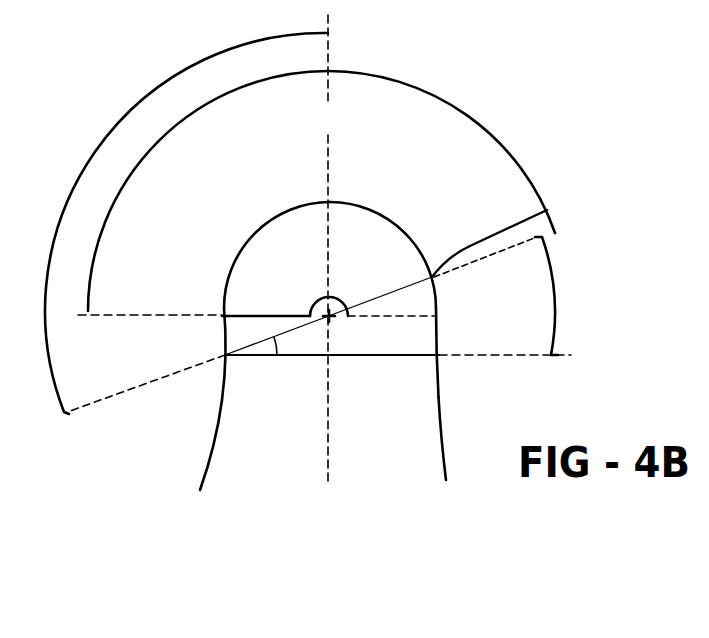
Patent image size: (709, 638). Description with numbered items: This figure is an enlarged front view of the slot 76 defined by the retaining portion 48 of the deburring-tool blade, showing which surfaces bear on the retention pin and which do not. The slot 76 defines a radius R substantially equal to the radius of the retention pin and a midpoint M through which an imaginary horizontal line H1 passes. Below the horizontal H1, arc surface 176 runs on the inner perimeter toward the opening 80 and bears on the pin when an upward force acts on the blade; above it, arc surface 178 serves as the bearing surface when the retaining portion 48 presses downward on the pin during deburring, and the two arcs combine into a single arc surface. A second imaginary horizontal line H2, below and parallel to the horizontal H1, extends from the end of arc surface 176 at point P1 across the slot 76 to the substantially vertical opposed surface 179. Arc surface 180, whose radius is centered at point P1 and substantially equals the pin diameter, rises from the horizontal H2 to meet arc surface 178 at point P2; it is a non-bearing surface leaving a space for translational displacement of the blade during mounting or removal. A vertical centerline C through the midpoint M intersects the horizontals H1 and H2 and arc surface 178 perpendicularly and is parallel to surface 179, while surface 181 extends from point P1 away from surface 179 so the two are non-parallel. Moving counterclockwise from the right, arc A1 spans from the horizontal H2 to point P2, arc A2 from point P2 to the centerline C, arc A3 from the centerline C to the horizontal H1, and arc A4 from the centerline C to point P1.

The retaining portion 48 is at (327, 293).
The slot 76 is at (418, 250).
The opening 80 is at (372, 421).
The arc surface 176 is at (226, 340).
The arc surface 178 is at (262, 226).
The opposed surface 179 is at (436, 397).
The arc surface 180 is at (437, 279).
The surface 181 is at (205, 459).
The arc A1 is at (556, 317).
The arc A2 is at (502, 145).
The arc A3 is at (117, 191).
The arc A4 is at (97, 157).
The point P1 is at (225, 358).
The point P2 is at (550, 209).
The horizontal line H1 is at (400, 317).
The horizontal line H2 is at (387, 357).
The radius R is at (255, 312).
The midpoint M is at (331, 321).
The centerline C is at (328, 249).